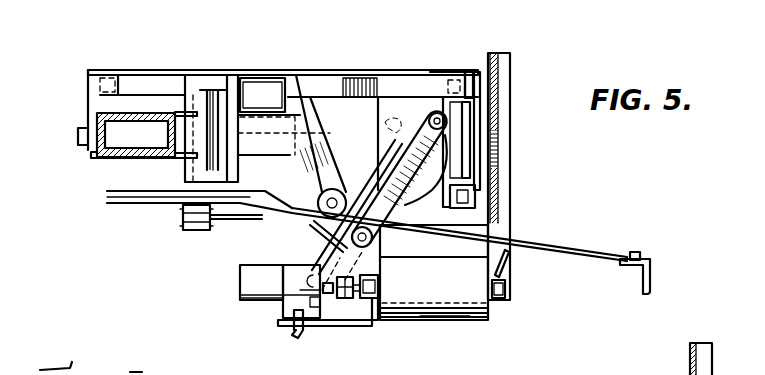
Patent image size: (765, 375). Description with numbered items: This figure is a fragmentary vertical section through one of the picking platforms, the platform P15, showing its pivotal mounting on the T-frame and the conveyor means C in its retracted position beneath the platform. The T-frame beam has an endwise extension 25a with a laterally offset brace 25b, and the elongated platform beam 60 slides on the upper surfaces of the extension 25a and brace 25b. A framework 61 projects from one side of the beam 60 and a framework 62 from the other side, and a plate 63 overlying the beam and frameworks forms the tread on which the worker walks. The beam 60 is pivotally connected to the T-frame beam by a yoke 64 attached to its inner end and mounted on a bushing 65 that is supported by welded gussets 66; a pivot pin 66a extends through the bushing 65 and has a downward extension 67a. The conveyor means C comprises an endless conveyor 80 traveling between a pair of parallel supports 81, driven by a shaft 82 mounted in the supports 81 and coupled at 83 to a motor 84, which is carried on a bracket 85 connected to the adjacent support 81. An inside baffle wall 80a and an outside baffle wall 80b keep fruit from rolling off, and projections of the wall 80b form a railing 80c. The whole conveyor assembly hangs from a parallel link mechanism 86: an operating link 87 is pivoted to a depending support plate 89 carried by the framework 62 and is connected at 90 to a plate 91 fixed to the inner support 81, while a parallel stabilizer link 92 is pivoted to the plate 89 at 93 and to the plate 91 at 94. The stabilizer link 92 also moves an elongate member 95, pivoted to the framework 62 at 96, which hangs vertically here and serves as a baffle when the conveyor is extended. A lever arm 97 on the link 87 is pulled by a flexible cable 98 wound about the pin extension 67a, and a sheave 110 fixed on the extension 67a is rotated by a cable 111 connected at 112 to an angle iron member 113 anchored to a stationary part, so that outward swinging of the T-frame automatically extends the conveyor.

The endwise extension 25a is at (100, 150).
The laterally offset brace 25b is at (263, 150).
The platform beam 60 is at (265, 78).
The framework 61 is at (105, 78).
The framework 62 is at (322, 84).
The plate 63 is at (172, 70).
The yoke 64 is at (229, 80).
The bushing 65 is at (188, 142).
The gussets 66 is at (125, 112).
The pivot pin 66a is at (256, 166).
The downward extension 67a is at (190, 229).
The endless conveyor means 80 is at (434, 287).
The inside baffle wall 80a is at (390, 250).
The outside baffle wall 80b is at (493, 203).
The railing 80c is at (529, 176).
The supports 81 is at (507, 297).
The driven shaft 82 is at (378, 289).
The coupling 83 is at (303, 326).
The motor 84 is at (242, 293).
The bracket 85 is at (340, 300).
The parallel link mechanism 86 is at (400, 205).
The operating link 87 is at (311, 227).
The depending support plate 89 is at (412, 105).
The pivotal connection 90 is at (274, 301).
The plate 91 is at (322, 283).
The stabilizer link 92 is at (497, 133).
The pivotal connection 93 is at (446, 118).
The pivotal connection 94 is at (373, 238).
The elongate member 95 is at (466, 163).
The pivot 96 is at (468, 73).
The lever arm 97 is at (380, 124).
The flexible cable 98 is at (232, 220).
The sheave 110 is at (150, 197).
The cable 111 is at (570, 249).
The connection 112 is at (641, 253).
The angle iron member 113 is at (652, 268).
The platform P15 is at (372, 68).
The conveyor means C is at (468, 316).